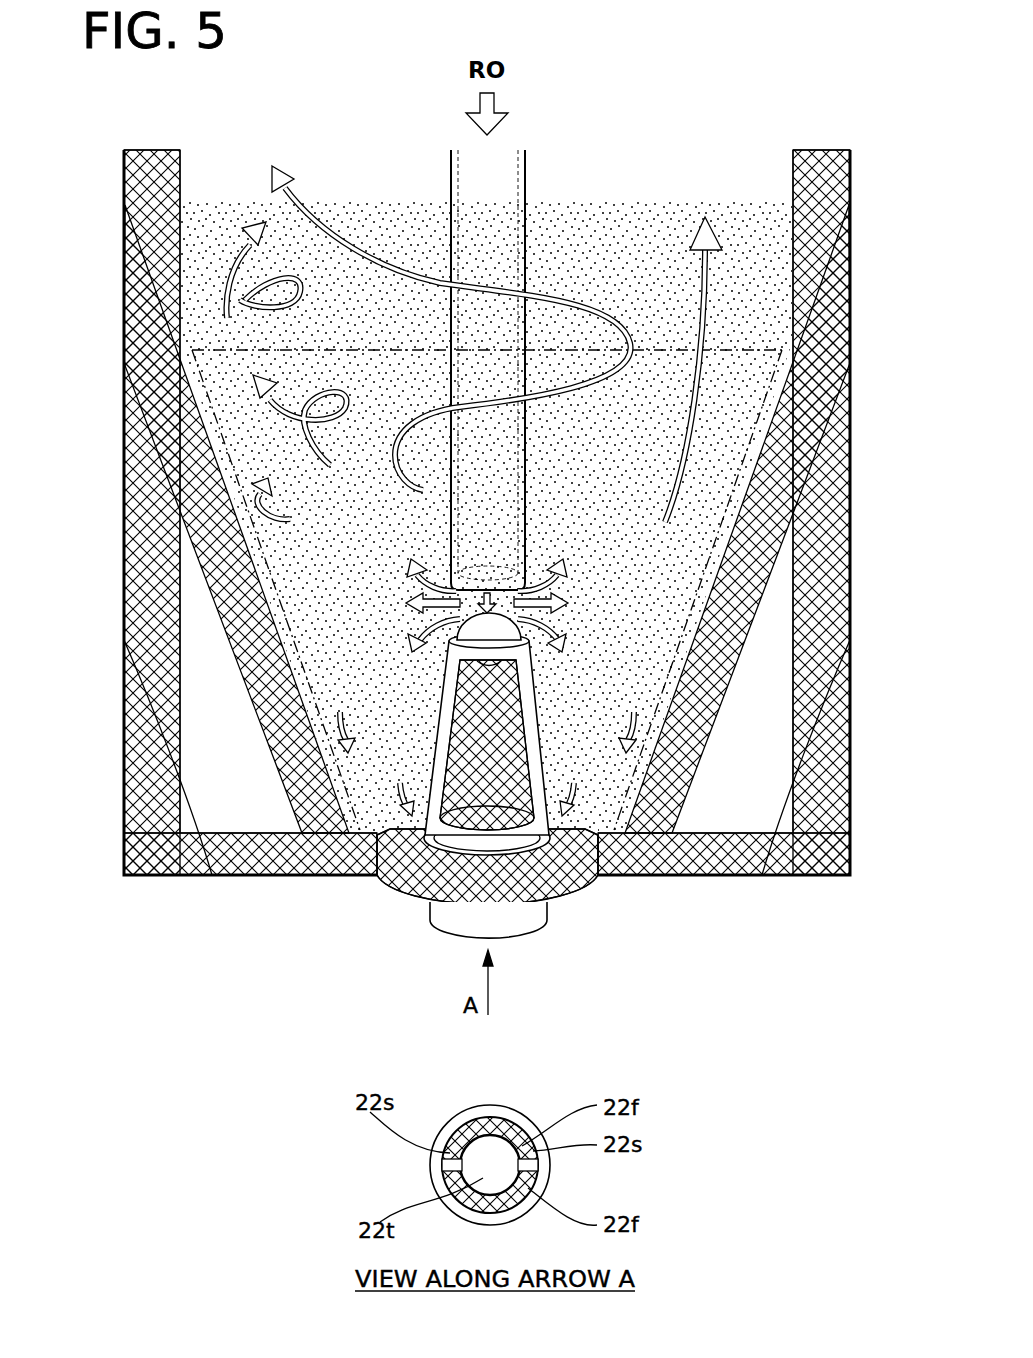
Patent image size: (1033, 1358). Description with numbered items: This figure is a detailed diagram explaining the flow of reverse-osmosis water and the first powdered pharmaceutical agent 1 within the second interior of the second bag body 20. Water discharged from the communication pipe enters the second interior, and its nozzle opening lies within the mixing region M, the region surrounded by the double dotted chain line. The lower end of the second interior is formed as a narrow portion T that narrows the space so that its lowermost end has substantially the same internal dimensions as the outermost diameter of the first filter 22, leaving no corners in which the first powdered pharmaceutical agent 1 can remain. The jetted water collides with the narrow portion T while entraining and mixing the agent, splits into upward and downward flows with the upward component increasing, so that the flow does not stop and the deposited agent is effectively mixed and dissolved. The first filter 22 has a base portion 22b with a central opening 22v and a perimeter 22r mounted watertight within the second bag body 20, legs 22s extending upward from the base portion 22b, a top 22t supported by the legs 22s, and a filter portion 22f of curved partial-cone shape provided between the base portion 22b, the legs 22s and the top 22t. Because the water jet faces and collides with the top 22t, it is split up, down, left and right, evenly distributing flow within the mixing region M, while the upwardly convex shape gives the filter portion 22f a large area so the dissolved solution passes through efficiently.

The first powdered pharmaceutical agent 1 is at (746, 270).
The mixing region M is at (770, 385).
The second bag body 20 is at (852, 460).
The narrow portion T is at (268, 590).
The first filter 22 is at (485, 868).
The top 22t is at (477, 629).
The legs 22s is at (533, 700).
The base portion 22b is at (417, 845).
The perimeter 22r is at (560, 887).
The filter portion 22f is at (497, 743).
The opening 22v is at (503, 1123).